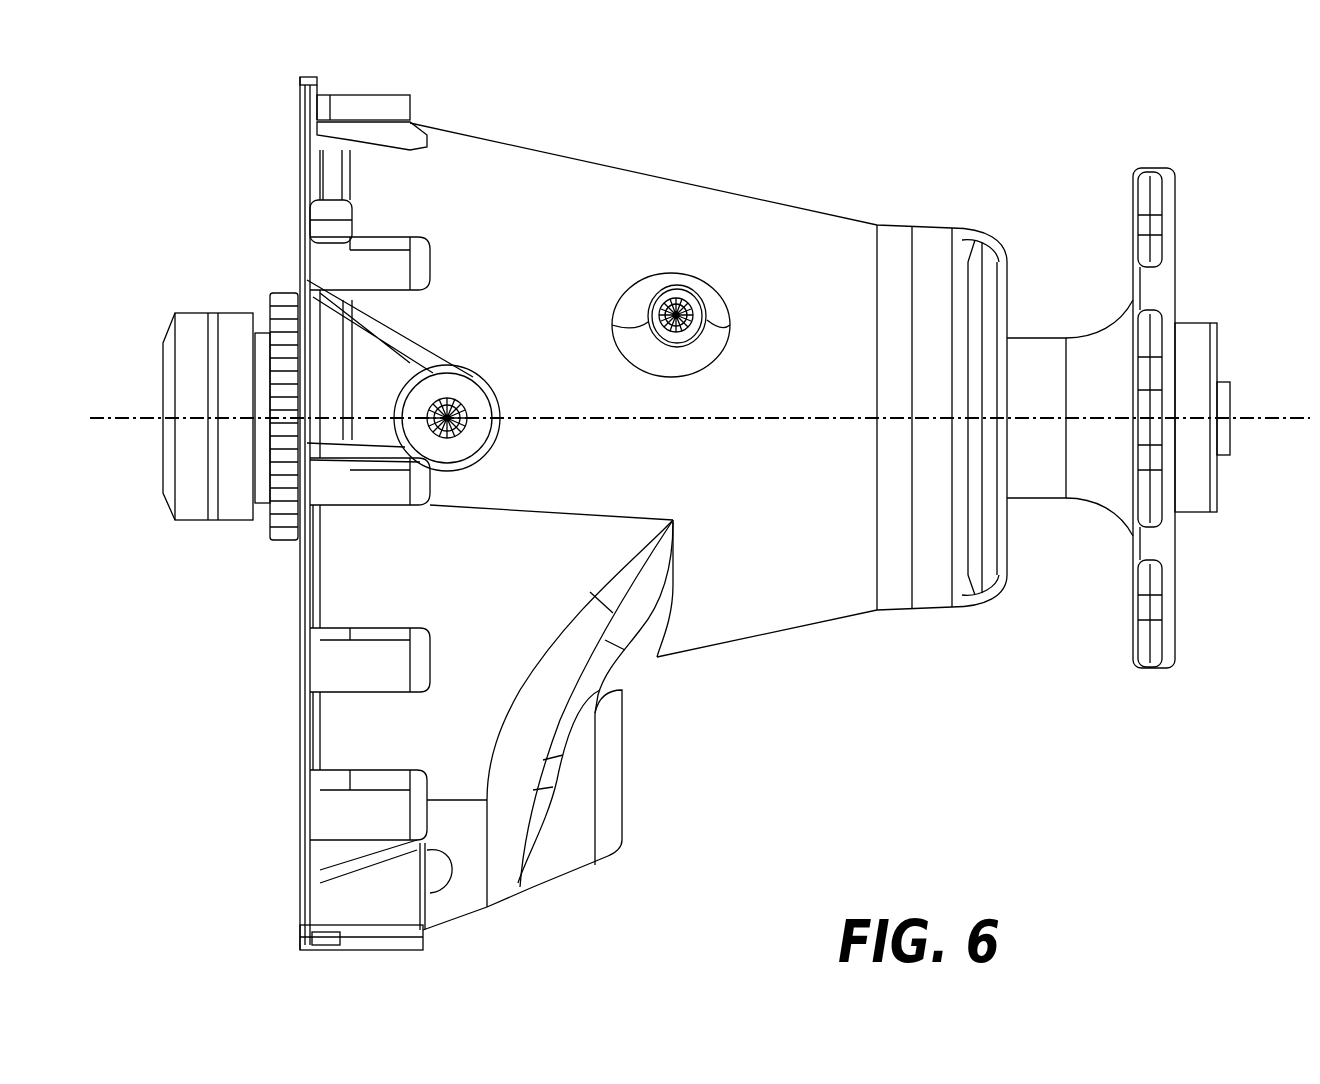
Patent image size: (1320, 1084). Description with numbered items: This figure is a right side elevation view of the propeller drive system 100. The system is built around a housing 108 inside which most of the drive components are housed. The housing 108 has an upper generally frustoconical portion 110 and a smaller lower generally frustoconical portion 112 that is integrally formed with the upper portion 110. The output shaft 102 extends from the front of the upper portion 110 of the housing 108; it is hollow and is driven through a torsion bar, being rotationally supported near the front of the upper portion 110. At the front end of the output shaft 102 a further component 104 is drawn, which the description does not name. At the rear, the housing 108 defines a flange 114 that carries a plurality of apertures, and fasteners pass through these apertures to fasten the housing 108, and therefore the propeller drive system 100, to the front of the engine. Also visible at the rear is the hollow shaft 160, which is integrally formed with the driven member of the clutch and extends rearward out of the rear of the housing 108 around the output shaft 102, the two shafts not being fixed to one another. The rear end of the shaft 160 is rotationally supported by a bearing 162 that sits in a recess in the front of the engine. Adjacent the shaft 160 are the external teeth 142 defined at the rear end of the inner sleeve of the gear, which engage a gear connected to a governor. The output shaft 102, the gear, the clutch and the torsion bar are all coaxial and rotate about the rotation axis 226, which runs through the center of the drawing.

The propeller drive system 100 is at (810, 141).
The output shaft 102 is at (1048, 468).
The output flange 104 is at (1168, 560).
The housing 108 is at (620, 198).
The upper generally frustoconical portion 110 is at (715, 205).
The lower generally frustoconical portion 112 is at (560, 855).
The flange 114 is at (317, 80).
The external teeth 142 is at (283, 297).
The hollow shaft 160 is at (266, 522).
The bearing 162 is at (197, 525).
The rotation axis 226 is at (765, 412).